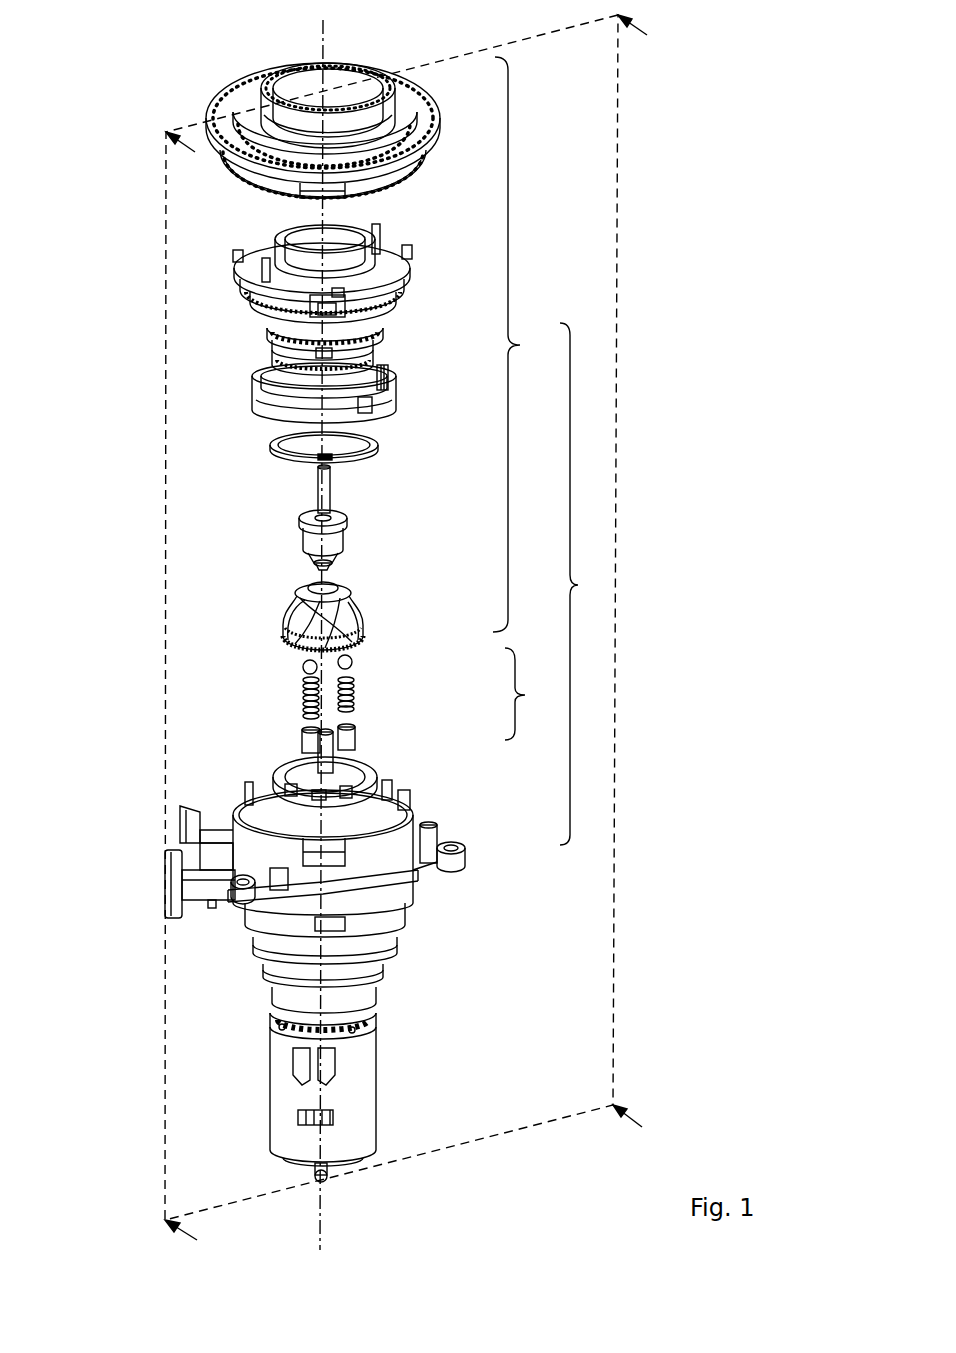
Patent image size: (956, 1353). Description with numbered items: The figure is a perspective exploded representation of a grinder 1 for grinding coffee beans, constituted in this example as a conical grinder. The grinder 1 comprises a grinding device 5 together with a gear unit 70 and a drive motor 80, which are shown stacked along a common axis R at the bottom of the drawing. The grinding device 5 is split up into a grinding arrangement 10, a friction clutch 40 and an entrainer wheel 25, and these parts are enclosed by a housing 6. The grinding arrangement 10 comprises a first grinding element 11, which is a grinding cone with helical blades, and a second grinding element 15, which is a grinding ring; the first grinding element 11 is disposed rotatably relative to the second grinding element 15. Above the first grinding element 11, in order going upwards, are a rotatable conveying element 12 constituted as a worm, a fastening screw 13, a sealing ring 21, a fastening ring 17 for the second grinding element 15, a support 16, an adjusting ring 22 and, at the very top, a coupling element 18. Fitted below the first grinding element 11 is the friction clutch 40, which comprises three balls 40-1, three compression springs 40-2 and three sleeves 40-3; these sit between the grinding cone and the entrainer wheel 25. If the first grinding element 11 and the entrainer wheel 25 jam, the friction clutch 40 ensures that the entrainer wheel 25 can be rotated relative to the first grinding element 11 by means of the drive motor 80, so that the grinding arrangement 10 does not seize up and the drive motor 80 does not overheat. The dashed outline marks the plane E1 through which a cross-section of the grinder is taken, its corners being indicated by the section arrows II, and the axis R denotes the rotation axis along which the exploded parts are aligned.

The grinder 1 is at (692, 297).
The grinding device 5 is at (382, 487).
The housing 6 is at (425, 815).
The grinding arrangement 10 is at (381, 353).
The first grinding element 11 is at (358, 617).
The conveying element 12 is at (347, 533).
The fastening screw 13 is at (327, 492).
The second grinding element 15 is at (385, 342).
The support 16 is at (407, 273).
The fastening ring 17 is at (397, 410).
The coupling element 18 is at (397, 100).
The sealing ring 21 is at (382, 445).
The adjusting ring 22 is at (427, 157).
The entrainer wheel 25 is at (386, 771).
The friction clutch 40 is at (429, 710).
The balls 40-1 is at (352, 663).
The compression springs 40-2 is at (356, 695).
The sleeves 40-3 is at (357, 738).
The gear unit 70 is at (412, 923).
The drive motor 80 is at (385, 1057).
The rotation axis R is at (325, 42).
The plane E1 is at (164, 1150).
The section line II is at (406, 639).